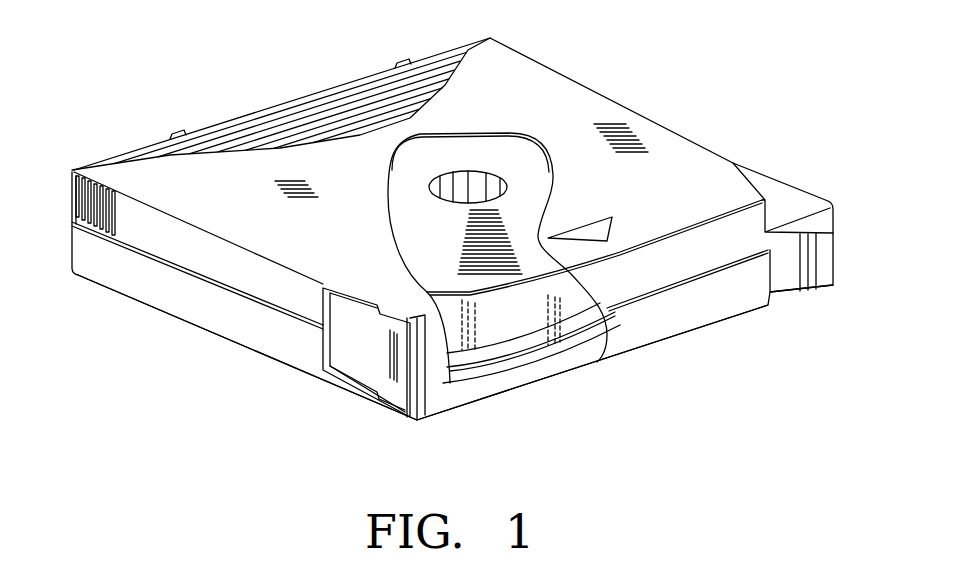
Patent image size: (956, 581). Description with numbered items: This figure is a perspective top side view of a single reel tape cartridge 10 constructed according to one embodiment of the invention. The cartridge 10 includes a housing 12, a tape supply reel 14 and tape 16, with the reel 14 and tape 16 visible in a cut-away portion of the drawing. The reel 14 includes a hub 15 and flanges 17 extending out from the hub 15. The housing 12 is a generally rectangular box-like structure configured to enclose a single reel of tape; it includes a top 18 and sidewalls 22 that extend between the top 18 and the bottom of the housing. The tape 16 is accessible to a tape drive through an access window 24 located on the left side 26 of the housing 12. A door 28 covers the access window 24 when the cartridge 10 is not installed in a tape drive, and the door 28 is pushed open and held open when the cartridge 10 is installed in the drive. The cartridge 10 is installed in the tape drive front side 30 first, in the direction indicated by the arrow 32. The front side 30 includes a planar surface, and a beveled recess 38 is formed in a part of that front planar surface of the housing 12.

The single reel tape cartridge 10 is at (697, 80).
The housing 12 is at (696, 130).
The tape supply reel 14 is at (410, 226).
The hub 15 is at (450, 182).
The tape 16 is at (574, 293).
The flanges 17 is at (515, 372).
The top 18 is at (580, 86).
The sidewalls 22 is at (252, 332).
The access window 24 is at (357, 323).
The left side 26 is at (252, 272).
The door 28 is at (360, 353).
The front side 30 is at (707, 240).
The arrow 32 is at (600, 230).
The beveled recess 38 is at (780, 278).